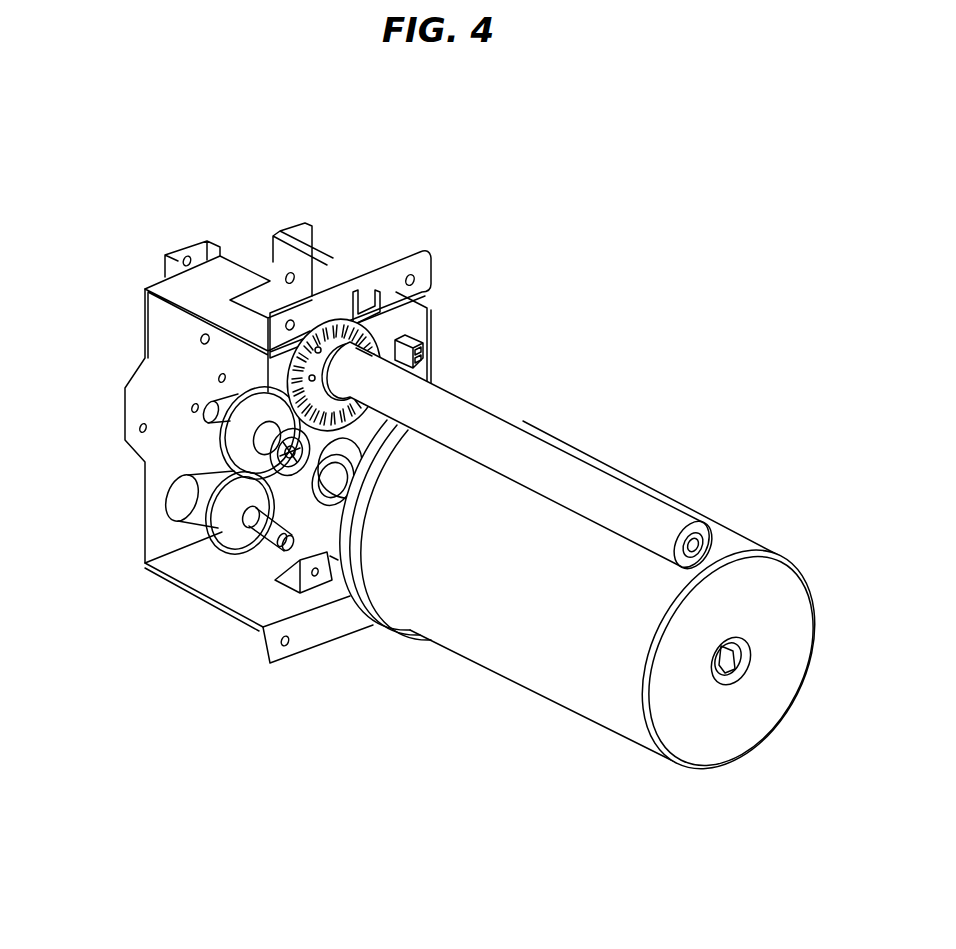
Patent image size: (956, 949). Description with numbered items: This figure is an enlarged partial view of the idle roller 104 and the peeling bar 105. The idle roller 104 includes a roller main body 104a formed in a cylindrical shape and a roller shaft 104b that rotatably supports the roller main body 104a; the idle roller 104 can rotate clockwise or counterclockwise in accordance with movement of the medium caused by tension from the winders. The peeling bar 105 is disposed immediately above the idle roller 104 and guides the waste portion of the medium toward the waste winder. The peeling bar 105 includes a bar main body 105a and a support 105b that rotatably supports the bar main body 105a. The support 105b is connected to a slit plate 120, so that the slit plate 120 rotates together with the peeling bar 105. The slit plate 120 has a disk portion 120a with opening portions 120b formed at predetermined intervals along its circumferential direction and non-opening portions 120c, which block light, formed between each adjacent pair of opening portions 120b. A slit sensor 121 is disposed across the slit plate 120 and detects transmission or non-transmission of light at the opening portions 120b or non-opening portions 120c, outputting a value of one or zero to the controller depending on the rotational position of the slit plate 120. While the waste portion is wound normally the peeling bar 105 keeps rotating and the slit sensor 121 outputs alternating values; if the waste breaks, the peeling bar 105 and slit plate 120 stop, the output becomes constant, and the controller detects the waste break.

The idle roller 104 is at (586, 613).
The roller main body 104a is at (527, 578).
The roller shaft 104b is at (343, 475).
The peeling bar 105 is at (523, 446).
The bar main body 105a is at (513, 453).
The support 105b is at (363, 355).
The slit plate 120 is at (280, 369).
The disk portion 120a is at (326, 336).
The opening portions 120b is at (244, 432).
The non-opening portions 120c is at (266, 391).
The slit sensor 121 is at (413, 334).